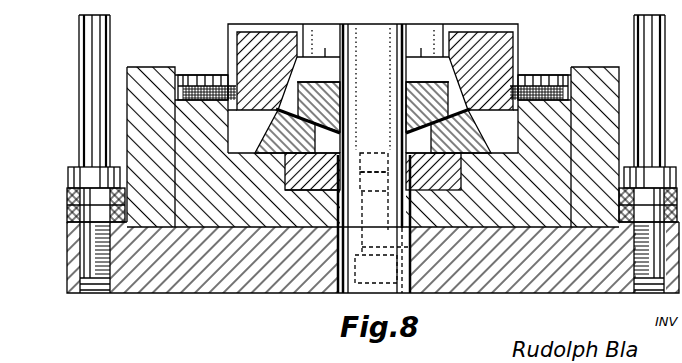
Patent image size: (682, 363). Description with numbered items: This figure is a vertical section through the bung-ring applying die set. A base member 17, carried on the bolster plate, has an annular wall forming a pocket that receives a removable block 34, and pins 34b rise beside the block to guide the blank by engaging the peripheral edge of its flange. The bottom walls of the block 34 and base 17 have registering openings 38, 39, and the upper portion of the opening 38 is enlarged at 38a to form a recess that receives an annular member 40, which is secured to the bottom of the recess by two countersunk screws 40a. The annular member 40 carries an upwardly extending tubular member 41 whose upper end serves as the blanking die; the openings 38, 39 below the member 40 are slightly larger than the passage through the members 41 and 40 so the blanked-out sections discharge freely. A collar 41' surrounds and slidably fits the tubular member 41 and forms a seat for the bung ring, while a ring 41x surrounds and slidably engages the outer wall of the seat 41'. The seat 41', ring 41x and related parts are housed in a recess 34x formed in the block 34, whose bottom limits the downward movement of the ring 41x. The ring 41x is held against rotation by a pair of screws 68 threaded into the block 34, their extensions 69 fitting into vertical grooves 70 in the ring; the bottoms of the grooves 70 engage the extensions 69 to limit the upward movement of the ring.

The base member 17 is at (224, 292).
The block 34 is at (223, 230).
The pins 34b is at (88, 50).
The recess 34x is at (506, 158).
The opening 38 is at (404, 213).
The enlarged upper portion of the opening 38a is at (298, 200).
The opening 39 is at (404, 265).
The annular member 40 is at (456, 181).
The countersunk screws 40a is at (406, 243).
The tubular member 41 is at (373, 148).
The collar 41' is at (373, 79).
The ring 41x is at (521, 78).
The screws 68 is at (551, 82).
The extensions 69 is at (224, 76).
The vertical grooves 70 is at (232, 33).